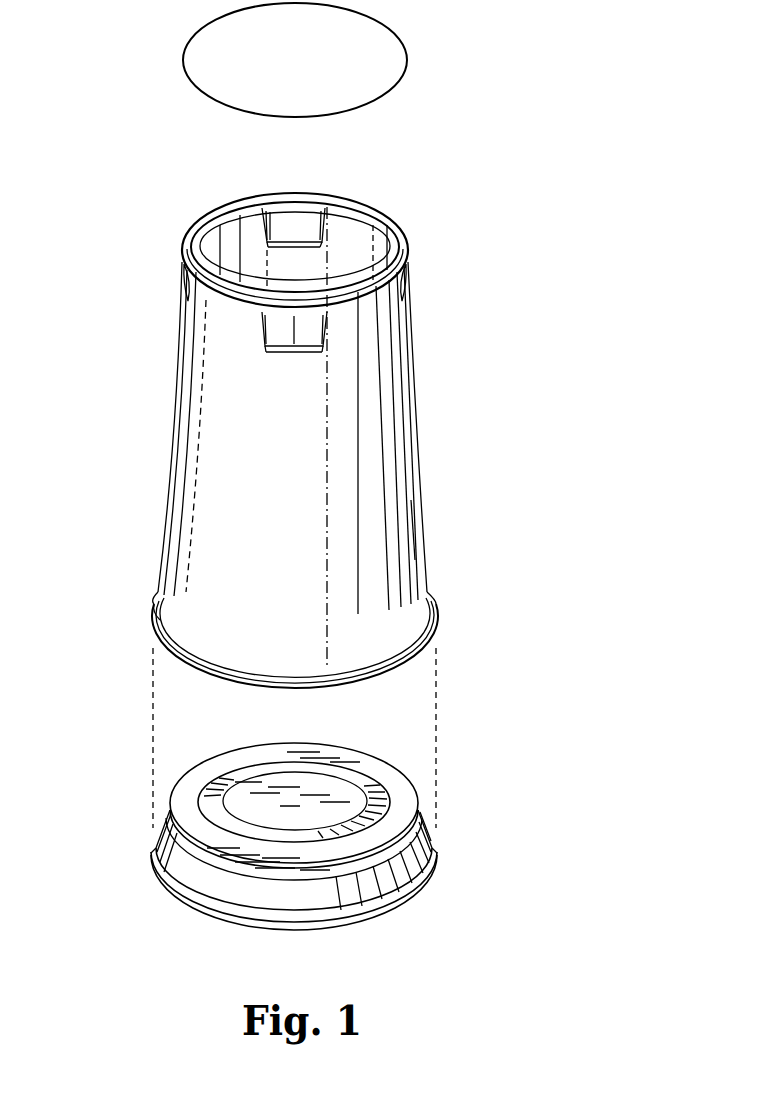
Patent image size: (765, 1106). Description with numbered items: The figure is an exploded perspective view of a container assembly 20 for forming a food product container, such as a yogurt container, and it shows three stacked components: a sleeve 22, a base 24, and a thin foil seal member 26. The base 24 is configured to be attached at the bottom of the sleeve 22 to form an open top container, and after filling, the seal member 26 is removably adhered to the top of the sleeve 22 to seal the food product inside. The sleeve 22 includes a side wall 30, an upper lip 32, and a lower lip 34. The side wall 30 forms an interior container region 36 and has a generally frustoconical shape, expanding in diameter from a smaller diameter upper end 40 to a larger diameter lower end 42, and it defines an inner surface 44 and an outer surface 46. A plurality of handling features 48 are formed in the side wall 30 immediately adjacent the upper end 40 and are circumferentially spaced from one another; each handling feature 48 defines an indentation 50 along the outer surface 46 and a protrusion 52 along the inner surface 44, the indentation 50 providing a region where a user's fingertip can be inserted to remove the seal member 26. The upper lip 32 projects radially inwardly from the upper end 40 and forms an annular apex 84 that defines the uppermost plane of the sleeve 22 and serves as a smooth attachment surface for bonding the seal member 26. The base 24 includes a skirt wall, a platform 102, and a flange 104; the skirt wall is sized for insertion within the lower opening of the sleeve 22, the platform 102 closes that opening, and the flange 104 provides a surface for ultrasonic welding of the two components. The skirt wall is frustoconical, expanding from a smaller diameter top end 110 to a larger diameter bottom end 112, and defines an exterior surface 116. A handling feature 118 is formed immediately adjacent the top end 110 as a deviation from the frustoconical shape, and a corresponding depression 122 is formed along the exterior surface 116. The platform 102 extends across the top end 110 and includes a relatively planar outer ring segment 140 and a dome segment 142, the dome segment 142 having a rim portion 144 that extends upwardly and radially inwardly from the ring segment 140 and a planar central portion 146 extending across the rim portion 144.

The container assembly 20 is at (61, 209).
The sleeve 22 is at (432, 425).
The base 24 is at (466, 826).
The seal member 26 is at (370, 58).
The side wall 30 is at (407, 514).
The upper lip 32 is at (405, 241).
The lower lip 34 is at (432, 614).
The interior container region 36 is at (372, 242).
The upper end 40 is at (183, 250).
The lower end 42 is at (166, 612).
The inner surface 44 is at (352, 232).
The outer surface 46 is at (414, 548).
The handling features 48 is at (306, 211).
The indentation 50 is at (293, 327).
The protrusion 52 is at (290, 236).
The annular apex 84 is at (396, 264).
The platform 102 is at (404, 781).
The flange 104 is at (400, 919).
The top end 110 is at (418, 807).
The bottom end 112 is at (416, 884).
The exterior surface 116 is at (265, 900).
The handling feature 118 is at (418, 834).
The depression 122 is at (213, 870).
The outer ring segment 140 is at (187, 797).
The dome segment 142 is at (322, 791).
The rim portion 144 is at (208, 795).
The central portion 146 is at (288, 778).